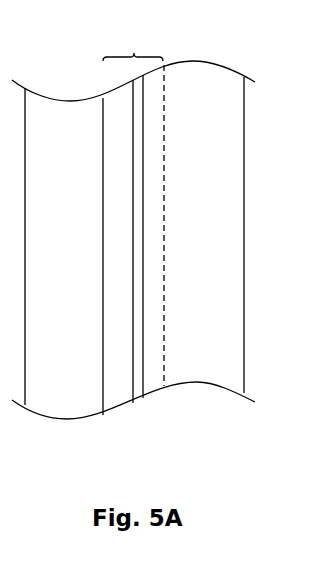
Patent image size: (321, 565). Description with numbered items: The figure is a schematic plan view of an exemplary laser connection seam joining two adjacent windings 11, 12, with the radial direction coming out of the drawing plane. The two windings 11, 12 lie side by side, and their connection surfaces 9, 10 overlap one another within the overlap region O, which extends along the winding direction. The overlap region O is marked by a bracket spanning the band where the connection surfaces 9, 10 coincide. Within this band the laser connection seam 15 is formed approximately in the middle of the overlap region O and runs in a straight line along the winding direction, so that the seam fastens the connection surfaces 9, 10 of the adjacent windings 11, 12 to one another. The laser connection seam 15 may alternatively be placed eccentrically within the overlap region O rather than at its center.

The connection surface 9 is at (118, 397).
The connection surface 10 is at (157, 378).
The winding 11 is at (198, 75).
The winding 12 is at (68, 110).
The laser connection seam 15 is at (143, 197).
The overlap region O is at (133, 45).